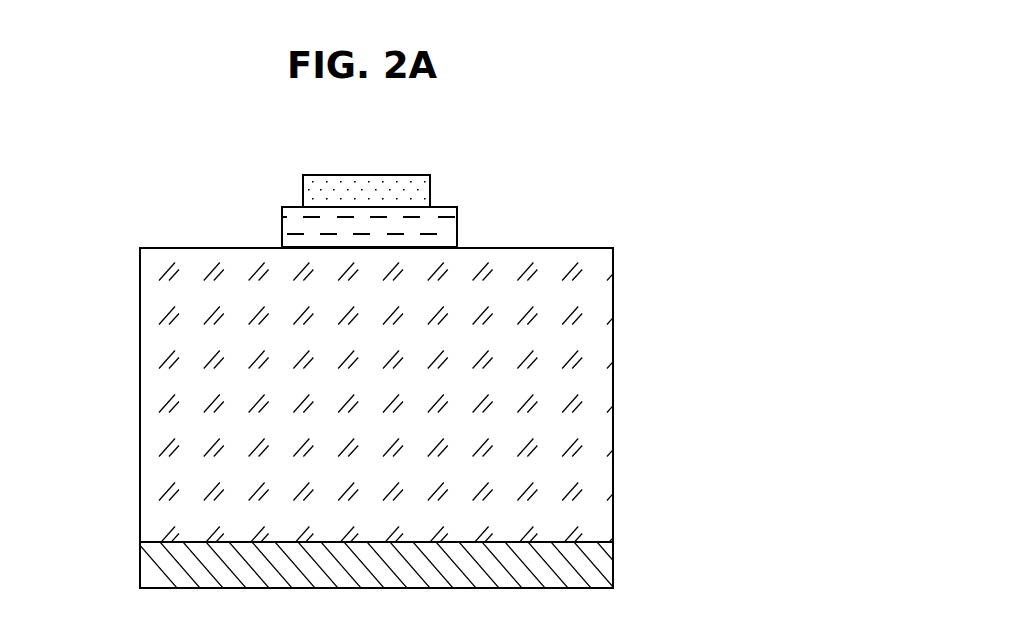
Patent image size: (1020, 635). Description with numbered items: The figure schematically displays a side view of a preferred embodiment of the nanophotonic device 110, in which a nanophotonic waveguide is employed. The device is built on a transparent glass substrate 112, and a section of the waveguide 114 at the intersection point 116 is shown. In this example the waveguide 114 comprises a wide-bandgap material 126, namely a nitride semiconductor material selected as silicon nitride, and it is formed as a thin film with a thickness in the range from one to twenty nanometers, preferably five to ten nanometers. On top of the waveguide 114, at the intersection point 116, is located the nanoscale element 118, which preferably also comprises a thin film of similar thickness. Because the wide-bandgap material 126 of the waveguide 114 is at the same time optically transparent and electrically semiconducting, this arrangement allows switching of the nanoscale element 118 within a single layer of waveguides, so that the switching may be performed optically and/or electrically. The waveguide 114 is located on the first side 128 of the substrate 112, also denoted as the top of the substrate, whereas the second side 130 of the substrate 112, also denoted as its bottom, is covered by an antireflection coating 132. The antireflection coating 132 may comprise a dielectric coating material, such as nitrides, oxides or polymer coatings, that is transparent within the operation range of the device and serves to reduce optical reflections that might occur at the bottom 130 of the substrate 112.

The nanophotonic device 110 is at (590, 148).
The transparent glass substrate 112 is at (173, 435).
The waveguide 114 is at (486, 217).
The intersection point 116 is at (486, 217).
The wide-bandgap material 126 is at (438, 223).
The nanoscale element 118 is at (327, 192).
The first side of the substrate 128 is at (193, 248).
The second side of the substrate 130 is at (187, 544).
The antireflection coating 132 is at (583, 559).